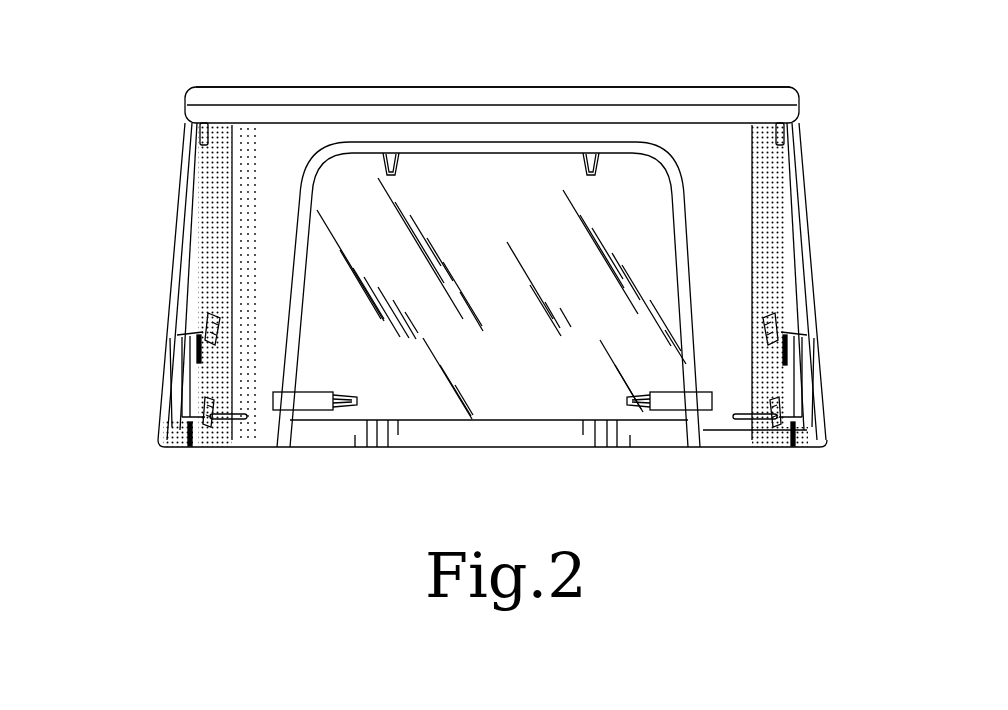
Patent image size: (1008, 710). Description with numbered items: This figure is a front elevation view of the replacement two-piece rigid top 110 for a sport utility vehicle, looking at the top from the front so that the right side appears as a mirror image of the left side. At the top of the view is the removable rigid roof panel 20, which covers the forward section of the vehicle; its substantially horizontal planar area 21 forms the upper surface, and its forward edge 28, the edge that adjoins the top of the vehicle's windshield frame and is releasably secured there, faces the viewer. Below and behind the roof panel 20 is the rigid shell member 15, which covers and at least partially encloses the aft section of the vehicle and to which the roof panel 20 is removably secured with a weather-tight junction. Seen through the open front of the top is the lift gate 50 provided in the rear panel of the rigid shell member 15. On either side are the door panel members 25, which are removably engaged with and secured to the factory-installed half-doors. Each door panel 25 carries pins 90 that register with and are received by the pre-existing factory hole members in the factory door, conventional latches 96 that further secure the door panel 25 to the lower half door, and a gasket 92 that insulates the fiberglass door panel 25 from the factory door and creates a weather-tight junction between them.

The removable rigid roof panel 20 is at (704, 86).
The substantially horizontal planar area 21 is at (295, 88).
The forward edge 28 is at (630, 100).
The two-piece top 110 is at (455, 72).
The rigid shell member 15 is at (730, 165).
The door panel member 25 is at (176, 266).
The lift gate 50 is at (522, 170).
The pin 90 is at (195, 355).
The gasket 92 is at (182, 392).
The latch 96 is at (214, 327).